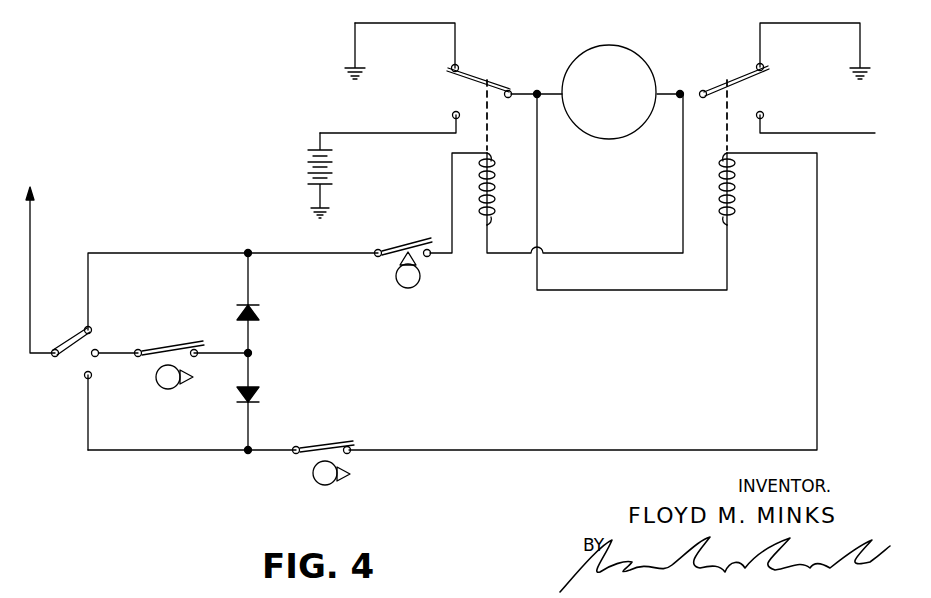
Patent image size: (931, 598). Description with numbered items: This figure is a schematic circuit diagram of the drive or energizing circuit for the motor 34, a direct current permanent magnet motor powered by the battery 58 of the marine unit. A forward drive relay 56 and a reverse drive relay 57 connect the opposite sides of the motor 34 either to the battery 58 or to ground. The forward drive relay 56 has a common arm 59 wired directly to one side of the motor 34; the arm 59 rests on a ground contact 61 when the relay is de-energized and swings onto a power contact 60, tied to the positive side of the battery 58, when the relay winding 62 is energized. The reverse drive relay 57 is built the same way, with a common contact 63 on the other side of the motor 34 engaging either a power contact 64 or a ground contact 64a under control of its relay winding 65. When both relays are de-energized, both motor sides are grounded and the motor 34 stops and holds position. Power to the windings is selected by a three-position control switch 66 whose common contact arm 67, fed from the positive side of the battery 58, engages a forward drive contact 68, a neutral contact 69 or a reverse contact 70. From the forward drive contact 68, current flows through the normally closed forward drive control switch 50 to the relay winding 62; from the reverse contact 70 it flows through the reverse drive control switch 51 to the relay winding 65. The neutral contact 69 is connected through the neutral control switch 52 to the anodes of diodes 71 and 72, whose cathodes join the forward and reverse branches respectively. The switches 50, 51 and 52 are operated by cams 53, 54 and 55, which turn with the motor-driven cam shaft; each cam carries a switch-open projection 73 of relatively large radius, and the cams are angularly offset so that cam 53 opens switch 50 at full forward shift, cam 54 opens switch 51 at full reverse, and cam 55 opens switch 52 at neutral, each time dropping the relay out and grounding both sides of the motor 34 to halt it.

The motor 34 is at (640, 48).
The forward drive control switch 50 is at (404, 241).
The reverse drive control switch 51 is at (323, 443).
The neutral control switch 52 is at (176, 346).
The forward drive cam 53 is at (413, 281).
The reverse drive cam 54 is at (322, 481).
The neutral cam 55 is at (172, 389).
The forward drive relay 56 is at (489, 127).
The reverse drive relay 57 is at (725, 128).
The battery 58 is at (308, 150).
The common arm 59 is at (497, 80).
The power contact 60 is at (452, 115).
The ground contact 61 is at (454, 65).
The relay winding 62 is at (495, 186).
The common contact 63 is at (745, 75).
The power contact 64 is at (764, 114).
The ground contact 64a is at (764, 65).
The relay winding 65 is at (735, 199).
The three-position control switch 66 is at (69, 330).
The common contact arm 67 is at (70, 345).
The forward drive contact 68 is at (92, 327).
The neutral contact 69 is at (98, 350).
The reverse contact 70 is at (91, 377).
The diode 71 is at (256, 312).
The diode 72 is at (258, 393).
The switch-open projection 73 is at (398, 262).